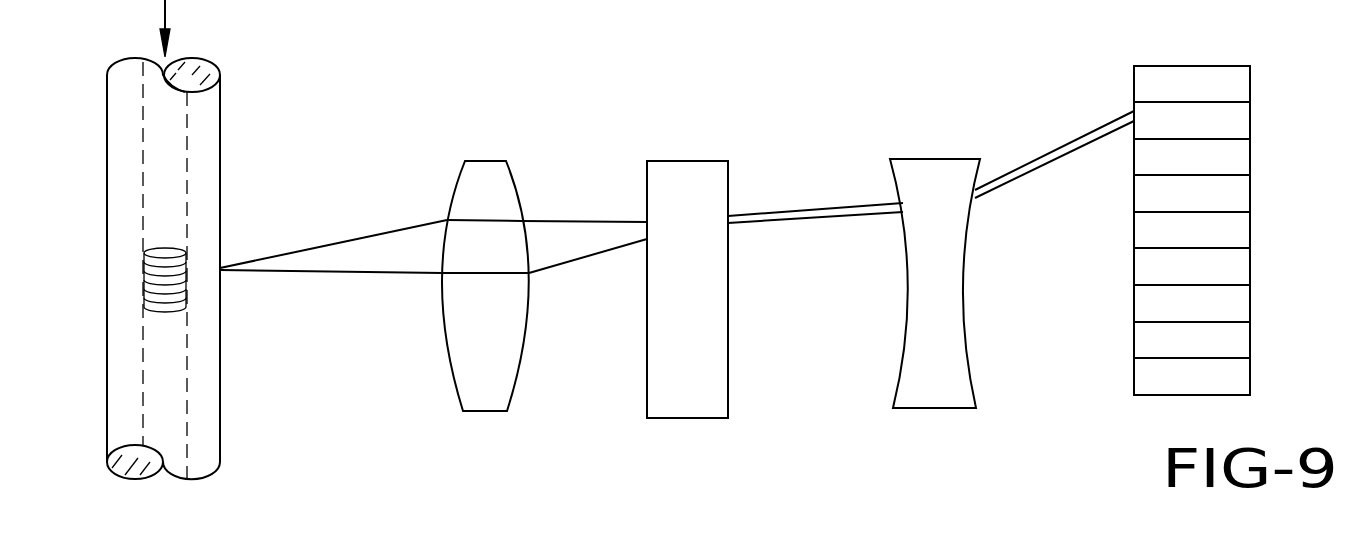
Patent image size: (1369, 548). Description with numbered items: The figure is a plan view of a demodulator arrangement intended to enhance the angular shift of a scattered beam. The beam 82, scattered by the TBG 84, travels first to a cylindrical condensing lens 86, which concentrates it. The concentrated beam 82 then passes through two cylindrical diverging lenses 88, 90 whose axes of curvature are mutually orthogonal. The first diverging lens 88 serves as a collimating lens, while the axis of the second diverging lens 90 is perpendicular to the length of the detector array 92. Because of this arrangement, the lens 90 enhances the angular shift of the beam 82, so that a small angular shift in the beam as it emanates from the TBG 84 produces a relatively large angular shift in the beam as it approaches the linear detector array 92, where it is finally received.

The beam 82 is at (409, 227).
The TBG 84 is at (170, 281).
The cylindrical condensing lens 86 is at (485, 412).
The cylindrical diverging lens 88 is at (690, 419).
The cylindrical diverging lens 90 is at (930, 409).
The detector array 92 is at (1288, 148).